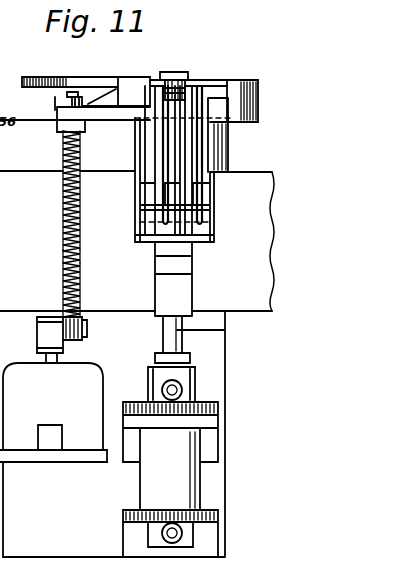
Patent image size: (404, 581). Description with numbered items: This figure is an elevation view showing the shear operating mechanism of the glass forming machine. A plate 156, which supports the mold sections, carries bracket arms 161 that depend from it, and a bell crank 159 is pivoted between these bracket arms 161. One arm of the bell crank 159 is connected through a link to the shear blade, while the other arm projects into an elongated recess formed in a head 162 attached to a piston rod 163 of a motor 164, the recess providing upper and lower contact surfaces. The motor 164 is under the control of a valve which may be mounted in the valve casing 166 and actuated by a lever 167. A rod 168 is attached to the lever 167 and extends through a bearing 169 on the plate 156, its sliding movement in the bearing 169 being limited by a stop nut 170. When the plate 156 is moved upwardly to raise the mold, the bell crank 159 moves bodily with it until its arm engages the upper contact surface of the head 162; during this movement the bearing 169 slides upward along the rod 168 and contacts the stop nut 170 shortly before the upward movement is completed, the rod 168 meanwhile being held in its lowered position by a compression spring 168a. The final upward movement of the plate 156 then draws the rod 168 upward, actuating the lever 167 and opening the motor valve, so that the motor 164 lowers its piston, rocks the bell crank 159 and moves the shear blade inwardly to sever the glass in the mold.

The plate 156 is at (240, 80).
The stop nut 170 is at (67, 98).
The bearing 169 is at (68, 122).
The bell crank 159 is at (173, 158).
The bracket arms 161 is at (202, 205).
The head 162 is at (192, 278).
The piston rod 163 is at (178, 330).
The motor 164 is at (157, 495).
The valve casing 166 is at (27, 430).
The lever 167 is at (63, 349).
The rod 168 is at (73, 273).
The compression spring 168a is at (63, 259).